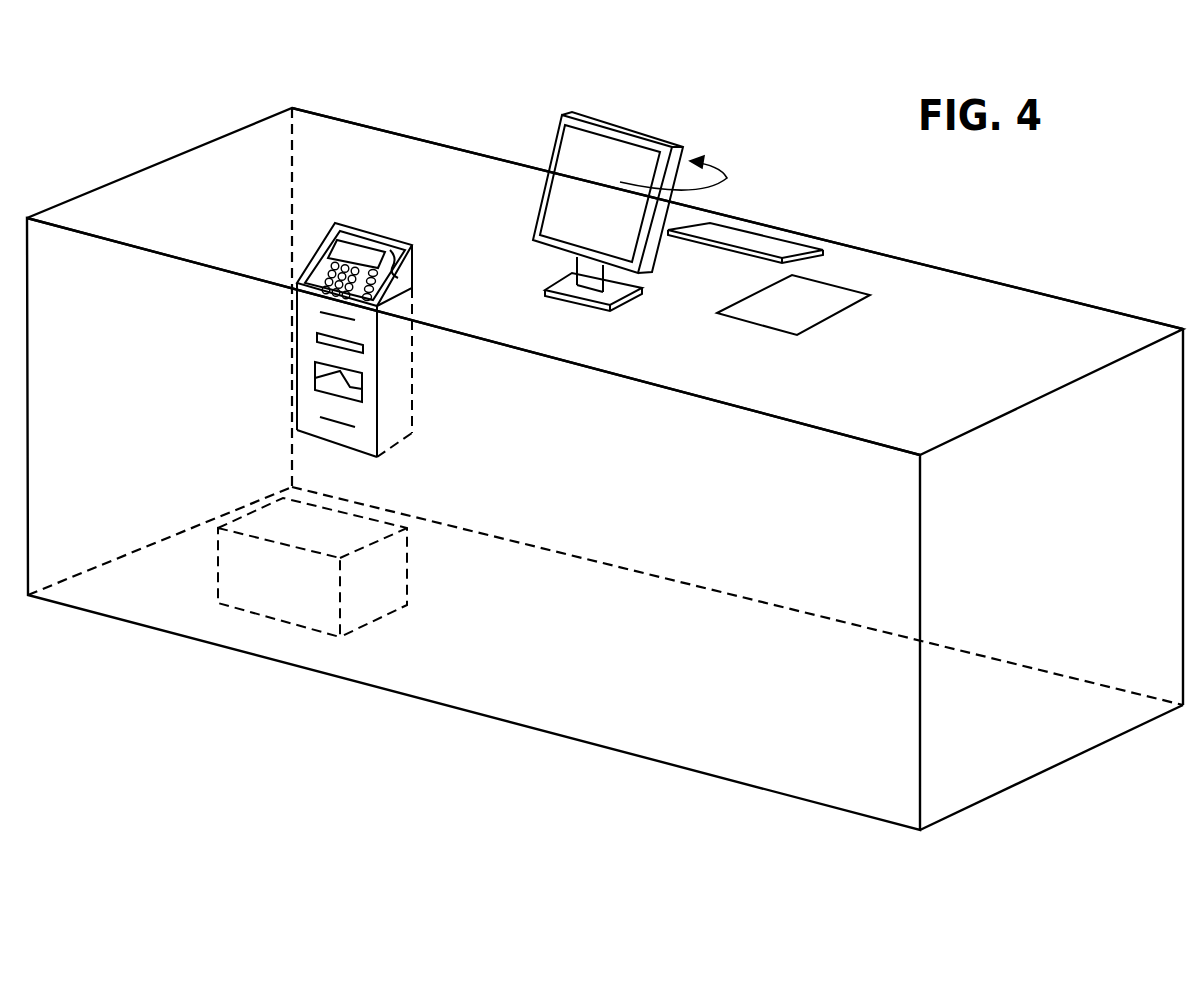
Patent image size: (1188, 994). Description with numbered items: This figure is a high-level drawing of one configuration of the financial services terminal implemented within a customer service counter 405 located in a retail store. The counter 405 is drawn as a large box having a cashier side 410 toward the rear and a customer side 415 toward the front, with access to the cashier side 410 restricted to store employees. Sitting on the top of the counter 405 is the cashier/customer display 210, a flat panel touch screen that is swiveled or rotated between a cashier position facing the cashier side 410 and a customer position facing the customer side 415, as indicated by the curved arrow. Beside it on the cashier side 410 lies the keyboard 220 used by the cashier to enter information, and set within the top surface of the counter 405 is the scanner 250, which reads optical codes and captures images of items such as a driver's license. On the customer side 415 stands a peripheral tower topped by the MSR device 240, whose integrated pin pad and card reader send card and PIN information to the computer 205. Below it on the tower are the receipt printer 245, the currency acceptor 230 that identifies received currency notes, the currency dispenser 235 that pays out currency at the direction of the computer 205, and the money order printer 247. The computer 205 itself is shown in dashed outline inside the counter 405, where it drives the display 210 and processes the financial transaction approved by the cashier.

The computer 205 is at (277, 618).
The cashier/customer display 210 is at (637, 130).
The keyboard 220 is at (780, 237).
The currency acceptor 230 is at (317, 335).
The currency dispenser 235 is at (313, 372).
The magnetic stripe reader and PIN pad (MSR) device 240 is at (360, 231).
The receipt printer 245 is at (347, 318).
The money order printer 247 is at (340, 425).
The scanner 250 is at (823, 292).
The counter 405 is at (1000, 352).
The cashier side 410 is at (482, 165).
The customer side 415 is at (680, 390).